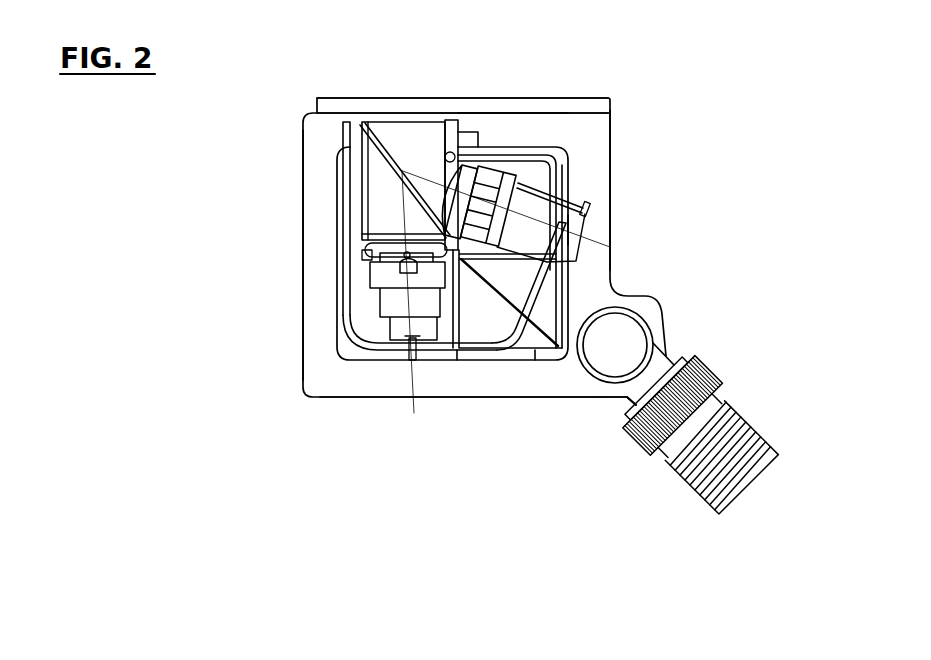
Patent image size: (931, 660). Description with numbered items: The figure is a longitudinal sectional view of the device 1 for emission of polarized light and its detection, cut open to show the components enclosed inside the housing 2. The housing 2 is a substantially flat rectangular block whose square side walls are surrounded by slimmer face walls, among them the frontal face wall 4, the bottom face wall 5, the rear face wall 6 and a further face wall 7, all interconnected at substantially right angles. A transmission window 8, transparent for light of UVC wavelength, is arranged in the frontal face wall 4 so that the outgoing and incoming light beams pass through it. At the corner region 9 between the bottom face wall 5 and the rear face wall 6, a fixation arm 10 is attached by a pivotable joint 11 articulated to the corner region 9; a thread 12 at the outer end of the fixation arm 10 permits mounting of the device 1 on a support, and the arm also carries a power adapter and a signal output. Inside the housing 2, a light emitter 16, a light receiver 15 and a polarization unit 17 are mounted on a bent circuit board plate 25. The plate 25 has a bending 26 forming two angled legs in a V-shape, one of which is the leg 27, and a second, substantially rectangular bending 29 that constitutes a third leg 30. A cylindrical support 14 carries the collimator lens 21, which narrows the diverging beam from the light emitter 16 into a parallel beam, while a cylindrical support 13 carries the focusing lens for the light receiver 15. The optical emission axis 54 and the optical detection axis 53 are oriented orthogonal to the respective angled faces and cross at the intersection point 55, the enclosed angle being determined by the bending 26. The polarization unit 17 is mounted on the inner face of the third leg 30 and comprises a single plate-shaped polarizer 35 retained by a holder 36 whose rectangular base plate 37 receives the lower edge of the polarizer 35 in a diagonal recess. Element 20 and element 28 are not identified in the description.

The device 1 is at (213, 392).
The housing 2 is at (325, 391).
The frontal face wall 4 is at (308, 108).
The bottom face wall 5 is at (612, 194).
The rear face wall 6 is at (467, 399).
The face wall 7 is at (301, 238).
The transmission window 8 is at (463, 112).
The corner region 9 is at (612, 390).
The fixation arm 10 is at (683, 454).
The pivotable joint 11 is at (643, 320).
The thread 12 is at (690, 485).
The support for focusing lens 13 is at (383, 289).
The support for collimator lens 14 is at (525, 198).
The light receiver 15 is at (400, 327).
The light emitter 16 is at (555, 201).
The polarization unit 17 is at (402, 152).
The lens 20 is at (372, 243).
The collimator lens 21 is at (472, 170).
The plate 25 is at (438, 352).
The bending 26 is at (535, 356).
The leg 27 is at (488, 356).
The spring strip 28 is at (548, 292).
The second bending 29 is at (357, 350).
The third leg 30 is at (343, 203).
The polarizer 35 is at (388, 150).
The holder 36 is at (443, 133).
The base plate 37 is at (428, 140).
The optical detection axis 53 is at (398, 195).
The optical emission axis 54 is at (588, 233).
The intersection point 55 is at (398, 168).